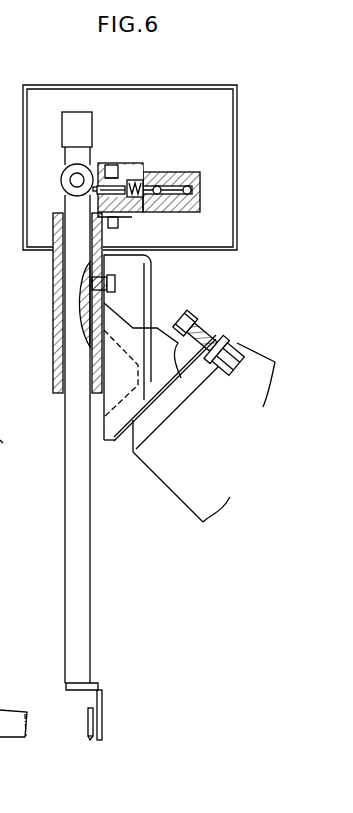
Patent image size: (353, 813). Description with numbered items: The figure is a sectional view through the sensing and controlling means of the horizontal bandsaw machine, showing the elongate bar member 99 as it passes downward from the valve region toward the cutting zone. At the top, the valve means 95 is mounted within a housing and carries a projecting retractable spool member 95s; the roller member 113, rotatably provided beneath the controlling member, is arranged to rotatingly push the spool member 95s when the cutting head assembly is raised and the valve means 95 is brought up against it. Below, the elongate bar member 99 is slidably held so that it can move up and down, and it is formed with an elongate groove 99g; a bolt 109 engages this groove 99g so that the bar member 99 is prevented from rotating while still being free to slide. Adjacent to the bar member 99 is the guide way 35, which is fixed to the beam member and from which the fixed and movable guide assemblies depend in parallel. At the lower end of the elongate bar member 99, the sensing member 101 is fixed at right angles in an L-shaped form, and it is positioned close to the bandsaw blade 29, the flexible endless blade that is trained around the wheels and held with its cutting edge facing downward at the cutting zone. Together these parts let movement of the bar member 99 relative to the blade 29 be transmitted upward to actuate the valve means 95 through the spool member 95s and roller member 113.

The roller member 113 is at (63, 175).
The valve means 95 is at (150, 162).
The projecting retractable spool member 95s is at (99, 163).
The elongate bar member 99 is at (70, 476).
The elongate groove 99g is at (88, 330).
The bolt 109 is at (116, 280).
The guide way 35 is at (114, 430).
The sensing member 101 is at (100, 712).
The bandsaw blade 29 is at (88, 727).